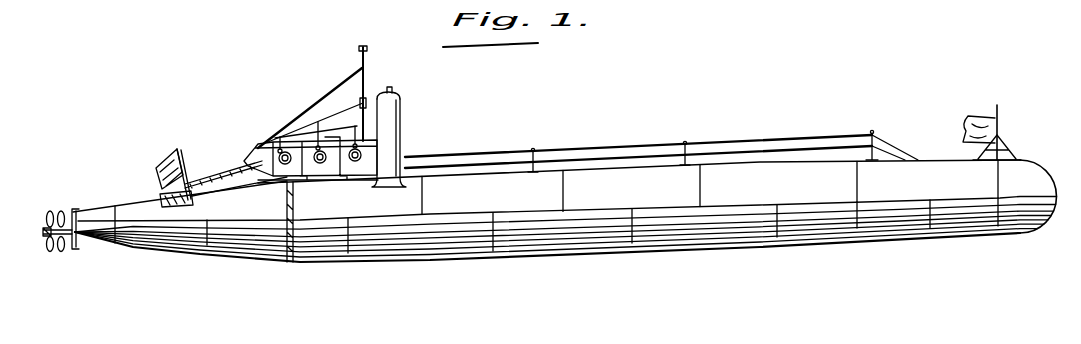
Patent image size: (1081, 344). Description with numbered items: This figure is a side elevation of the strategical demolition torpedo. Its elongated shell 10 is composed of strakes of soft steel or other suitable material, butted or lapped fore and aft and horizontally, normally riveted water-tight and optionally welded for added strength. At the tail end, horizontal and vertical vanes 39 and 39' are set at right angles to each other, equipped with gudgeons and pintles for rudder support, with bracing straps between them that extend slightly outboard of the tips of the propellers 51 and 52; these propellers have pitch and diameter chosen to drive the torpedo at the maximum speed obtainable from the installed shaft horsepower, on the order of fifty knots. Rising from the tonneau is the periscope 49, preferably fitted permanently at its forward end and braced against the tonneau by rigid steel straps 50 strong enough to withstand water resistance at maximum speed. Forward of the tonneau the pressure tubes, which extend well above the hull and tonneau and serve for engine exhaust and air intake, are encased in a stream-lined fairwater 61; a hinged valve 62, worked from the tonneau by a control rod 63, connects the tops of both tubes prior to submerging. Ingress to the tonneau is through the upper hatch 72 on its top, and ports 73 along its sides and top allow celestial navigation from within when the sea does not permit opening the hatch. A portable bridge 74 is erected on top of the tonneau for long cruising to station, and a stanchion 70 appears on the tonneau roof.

The shell 10 is at (935, 168).
The horizontal vane 39 is at (152, 199).
The vertical vane 39' is at (180, 194).
The propeller 51 is at (53, 251).
The propeller 52 is at (63, 252).
The periscope 49 is at (360, 55).
The rigid steel straps 50 is at (323, 96).
The portable bridge 74 is at (303, 124).
The upper hatch 72 is at (340, 121).
The stanchion 70 is at (280, 137).
The control rod 63 is at (388, 90).
The hinged valve 62 is at (398, 96).
The fairwater 61 is at (401, 124).
The ports 73 is at (364, 156).